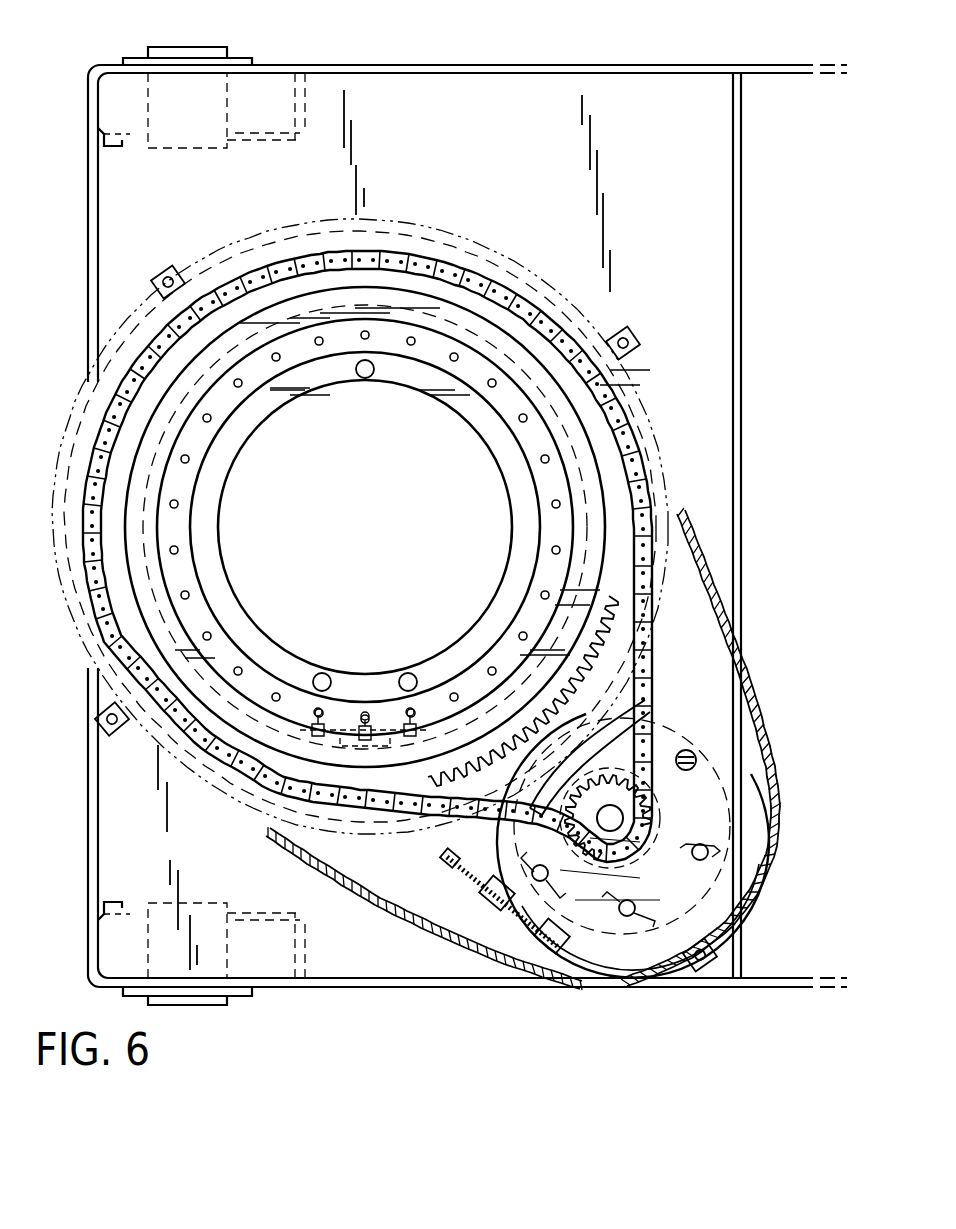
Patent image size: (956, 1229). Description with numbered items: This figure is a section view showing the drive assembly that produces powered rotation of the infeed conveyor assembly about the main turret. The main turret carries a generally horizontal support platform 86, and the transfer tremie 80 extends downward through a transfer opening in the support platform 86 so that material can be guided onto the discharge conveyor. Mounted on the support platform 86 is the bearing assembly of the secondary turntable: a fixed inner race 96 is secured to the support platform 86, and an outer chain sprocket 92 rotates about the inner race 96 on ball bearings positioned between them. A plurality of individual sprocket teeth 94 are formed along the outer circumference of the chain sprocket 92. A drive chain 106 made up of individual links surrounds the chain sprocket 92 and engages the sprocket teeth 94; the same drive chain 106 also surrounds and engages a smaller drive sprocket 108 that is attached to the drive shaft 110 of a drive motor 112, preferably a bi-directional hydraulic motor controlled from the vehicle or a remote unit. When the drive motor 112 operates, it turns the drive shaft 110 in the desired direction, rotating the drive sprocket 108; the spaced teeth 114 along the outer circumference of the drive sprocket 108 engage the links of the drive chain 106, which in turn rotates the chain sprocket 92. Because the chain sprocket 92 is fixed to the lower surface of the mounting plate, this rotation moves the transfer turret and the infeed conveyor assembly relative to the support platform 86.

The support platform 86 is at (493, 85).
The drive chain 106 is at (473, 280).
The inner race 96 is at (390, 342).
The transfer tremie 80 is at (468, 415).
The chain sprocket 92 is at (600, 635).
The sprocket teeth 94 is at (432, 815).
The spaced teeth 114 is at (602, 752).
The drive sprocket 108 is at (633, 800).
The drive motor 112 is at (678, 830).
The drive shaft 110 is at (567, 820).